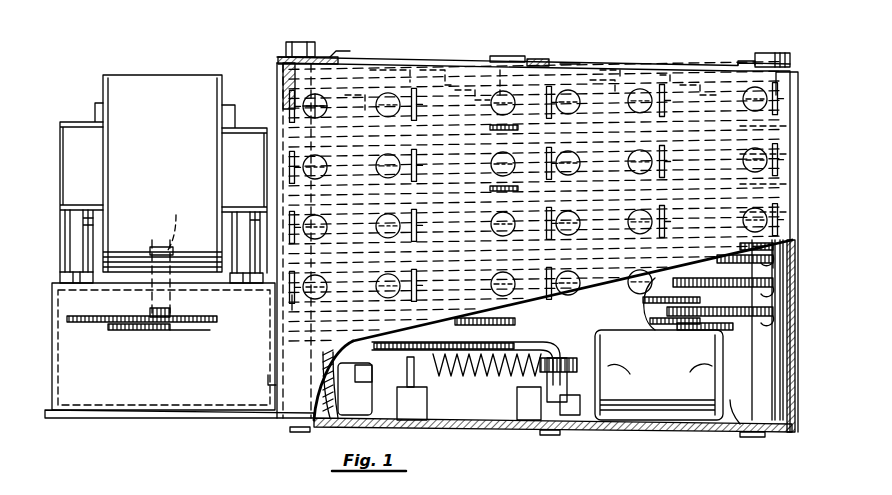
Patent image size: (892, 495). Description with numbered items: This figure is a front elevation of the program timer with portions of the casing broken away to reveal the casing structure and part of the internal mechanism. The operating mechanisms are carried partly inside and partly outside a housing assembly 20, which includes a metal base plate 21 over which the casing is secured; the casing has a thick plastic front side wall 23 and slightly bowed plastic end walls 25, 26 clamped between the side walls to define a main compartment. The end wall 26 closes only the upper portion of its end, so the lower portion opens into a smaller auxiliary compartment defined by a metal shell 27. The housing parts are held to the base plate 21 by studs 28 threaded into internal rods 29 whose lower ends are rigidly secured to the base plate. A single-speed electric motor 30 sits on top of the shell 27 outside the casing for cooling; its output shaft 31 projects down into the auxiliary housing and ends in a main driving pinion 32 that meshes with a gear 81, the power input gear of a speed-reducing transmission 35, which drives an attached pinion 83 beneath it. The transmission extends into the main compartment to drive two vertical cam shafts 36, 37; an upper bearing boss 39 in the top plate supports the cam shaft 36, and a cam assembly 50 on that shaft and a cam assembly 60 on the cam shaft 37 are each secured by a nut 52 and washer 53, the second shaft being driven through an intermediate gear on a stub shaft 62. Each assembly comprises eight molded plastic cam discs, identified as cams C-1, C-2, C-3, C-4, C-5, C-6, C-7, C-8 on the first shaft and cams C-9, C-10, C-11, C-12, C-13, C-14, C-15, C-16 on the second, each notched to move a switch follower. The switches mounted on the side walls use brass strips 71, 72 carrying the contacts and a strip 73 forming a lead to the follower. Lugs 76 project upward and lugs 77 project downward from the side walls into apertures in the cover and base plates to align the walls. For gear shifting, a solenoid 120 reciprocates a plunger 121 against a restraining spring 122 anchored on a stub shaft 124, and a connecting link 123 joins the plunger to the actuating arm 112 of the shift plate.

The housing assembly 20 is at (627, 66).
The base plate 21 is at (489, 428).
The front side wall 23 is at (560, 60).
The end wall 25 is at (792, 398).
The end wall 26 is at (284, 100).
The metal shell 27 is at (52, 296).
The stud 28 is at (289, 44).
The internal rod 29 is at (270, 384).
The electric motor 30 is at (114, 75).
The output shaft 31 is at (169, 227).
The main driving pinion 32 is at (150, 310).
The transmission 35 is at (195, 336).
The cam shaft 36 is at (385, 68).
The cam shaft 37 is at (682, 70).
The upper bearing boss 39 is at (470, 90).
The cam assembly 50 is at (502, 68).
The nut 52 is at (436, 72).
The washer 53 is at (366, 104).
The cam assembly 60 is at (606, 68).
The stub shaft 62 is at (564, 428).
The strip 71 is at (555, 90).
The strip 72 is at (414, 88).
The strip 73 is at (792, 92).
The lug 76 is at (328, 60).
The lug 77 is at (297, 432).
The gear 81 is at (84, 325).
The pinion 83 is at (108, 330).
The actuating arm 112 is at (347, 384).
The solenoid 120 is at (656, 422).
The plunger 121 is at (574, 394).
The restraining spring 122 is at (508, 388).
The connecting link 123 is at (592, 342).
The stub shaft 124 is at (430, 390).
The cam C-1 is at (515, 322).
The cam C-2 is at (292, 300).
The cam C-3 is at (510, 281).
The cam C-4 is at (506, 214).
The cam C-5 is at (520, 186).
The cam C-6 is at (504, 154).
The cam C-7 is at (296, 128).
The cam C-8 is at (503, 92).
The cam C-9 is at (783, 332).
The cam C-10 is at (790, 312).
The cam C-11 is at (790, 280).
The cam C-12 is at (790, 240).
The cam C-13 is at (790, 212).
The cam C-14 is at (790, 184).
The cam C-15 is at (788, 152).
The cam C-16 is at (791, 126).